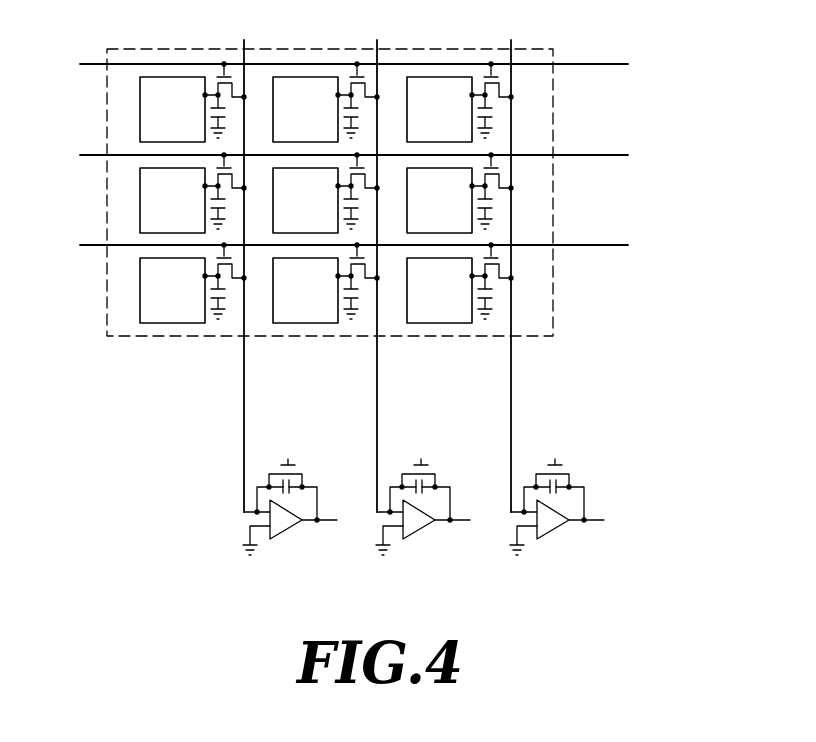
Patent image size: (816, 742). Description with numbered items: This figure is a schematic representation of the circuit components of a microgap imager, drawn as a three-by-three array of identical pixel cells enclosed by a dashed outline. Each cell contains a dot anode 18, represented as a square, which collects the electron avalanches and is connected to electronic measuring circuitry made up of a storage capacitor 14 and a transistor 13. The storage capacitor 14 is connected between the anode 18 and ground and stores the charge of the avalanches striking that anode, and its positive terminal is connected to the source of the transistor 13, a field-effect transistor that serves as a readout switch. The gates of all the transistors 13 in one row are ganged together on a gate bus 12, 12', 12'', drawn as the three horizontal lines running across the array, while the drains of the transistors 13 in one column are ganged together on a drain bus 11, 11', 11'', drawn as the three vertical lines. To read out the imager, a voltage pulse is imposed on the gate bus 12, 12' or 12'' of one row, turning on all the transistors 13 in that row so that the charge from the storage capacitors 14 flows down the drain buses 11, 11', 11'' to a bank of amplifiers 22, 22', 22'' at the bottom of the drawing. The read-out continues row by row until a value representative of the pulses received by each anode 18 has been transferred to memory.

The drain bus 11 is at (269, 276).
The drain bus 11' is at (408, 276).
The drain bus 11'' is at (547, 276).
The gate bus 12 is at (372, 48).
The gate bus 12' is at (395, 134).
The gate bus 12'' is at (384, 264).
The transistor 13 is at (562, 174).
The storage capacitor 14 is at (557, 209).
The dot anode 18 is at (172, 325).
The amplifier 22 is at (290, 536).
The amplifier 22' is at (423, 537).
The amplifier 22'' is at (557, 537).